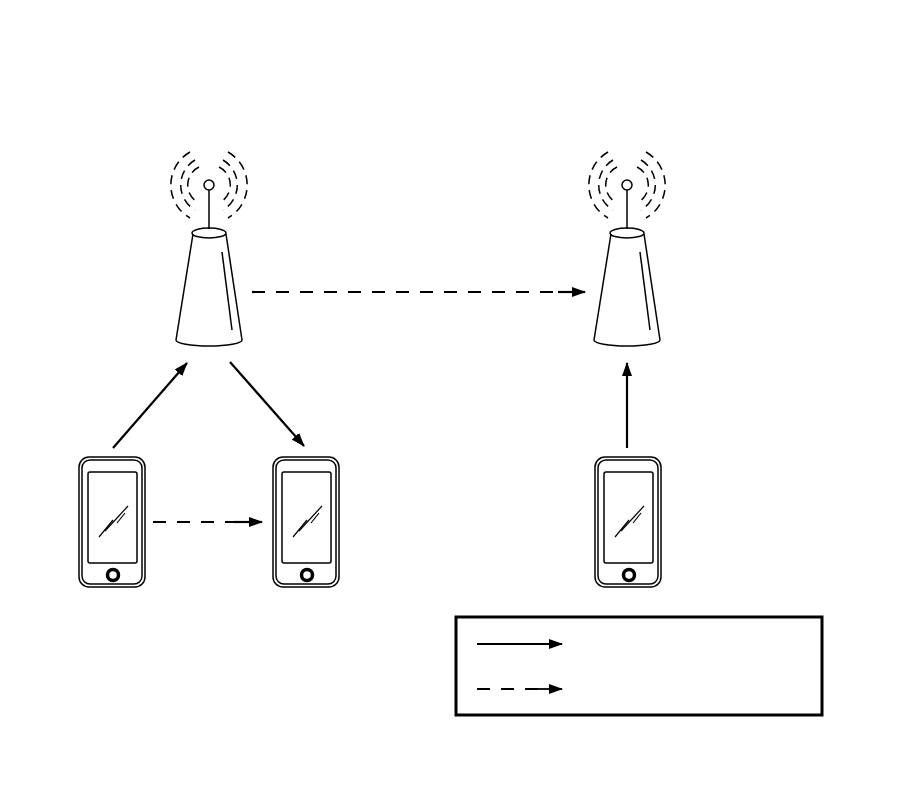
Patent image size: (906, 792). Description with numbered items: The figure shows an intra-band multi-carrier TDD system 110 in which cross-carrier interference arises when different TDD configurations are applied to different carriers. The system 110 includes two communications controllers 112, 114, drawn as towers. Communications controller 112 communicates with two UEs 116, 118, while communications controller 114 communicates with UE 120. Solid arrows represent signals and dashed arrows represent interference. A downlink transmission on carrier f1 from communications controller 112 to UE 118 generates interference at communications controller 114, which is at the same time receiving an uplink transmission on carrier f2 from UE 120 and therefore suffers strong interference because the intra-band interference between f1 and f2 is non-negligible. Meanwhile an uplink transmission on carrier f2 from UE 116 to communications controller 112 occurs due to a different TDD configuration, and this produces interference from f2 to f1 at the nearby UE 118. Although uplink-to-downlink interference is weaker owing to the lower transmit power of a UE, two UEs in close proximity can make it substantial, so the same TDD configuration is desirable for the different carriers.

The system 110 is at (299, 75).
The communications controller 112 is at (185, 284).
The communications controller 114 is at (653, 285).
The UE 116 is at (80, 534).
The UE 118 is at (340, 533).
The UE 120 is at (661, 532).